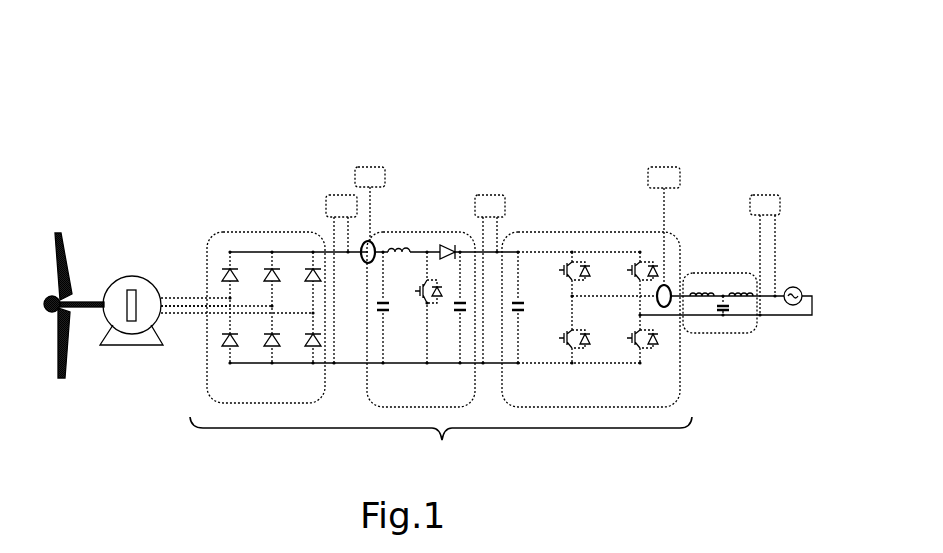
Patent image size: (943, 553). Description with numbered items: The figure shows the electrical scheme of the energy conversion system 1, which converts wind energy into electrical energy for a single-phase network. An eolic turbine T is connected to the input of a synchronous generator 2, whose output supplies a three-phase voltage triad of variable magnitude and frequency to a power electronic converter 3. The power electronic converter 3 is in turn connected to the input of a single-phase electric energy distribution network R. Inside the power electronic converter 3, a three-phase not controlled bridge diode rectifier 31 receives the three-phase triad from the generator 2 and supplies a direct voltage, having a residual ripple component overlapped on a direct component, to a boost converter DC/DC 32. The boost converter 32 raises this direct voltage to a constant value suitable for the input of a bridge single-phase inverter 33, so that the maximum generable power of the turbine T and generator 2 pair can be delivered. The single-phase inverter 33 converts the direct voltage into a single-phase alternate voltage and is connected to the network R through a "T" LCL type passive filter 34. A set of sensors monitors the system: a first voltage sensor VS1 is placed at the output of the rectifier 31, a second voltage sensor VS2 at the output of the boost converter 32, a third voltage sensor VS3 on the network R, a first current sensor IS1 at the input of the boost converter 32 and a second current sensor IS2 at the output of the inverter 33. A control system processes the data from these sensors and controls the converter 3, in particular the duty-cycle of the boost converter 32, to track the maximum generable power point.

The energy conversion system 1 is at (190, 116).
The eolic turbine T is at (72, 222).
The synchronous generator 2 is at (132, 352).
The power electronic converter 3 is at (540, 451).
The three-phase not controlled bridge diode rectifier 31 is at (250, 218).
The boost converter DC/DC 32 is at (410, 218).
The bridge single-phase inverter 33 is at (560, 218).
The "T" LCL type passive filter 34 is at (707, 260).
The single-phase electric energy distribution network R is at (790, 326).
The first voltage sensor VS1 is at (335, 183).
The first current sensor IS1 is at (369, 158).
The second voltage sensor VS2 is at (492, 180).
The second current sensor IS2 is at (667, 155).
The third voltage sensor VS3 is at (765, 188).